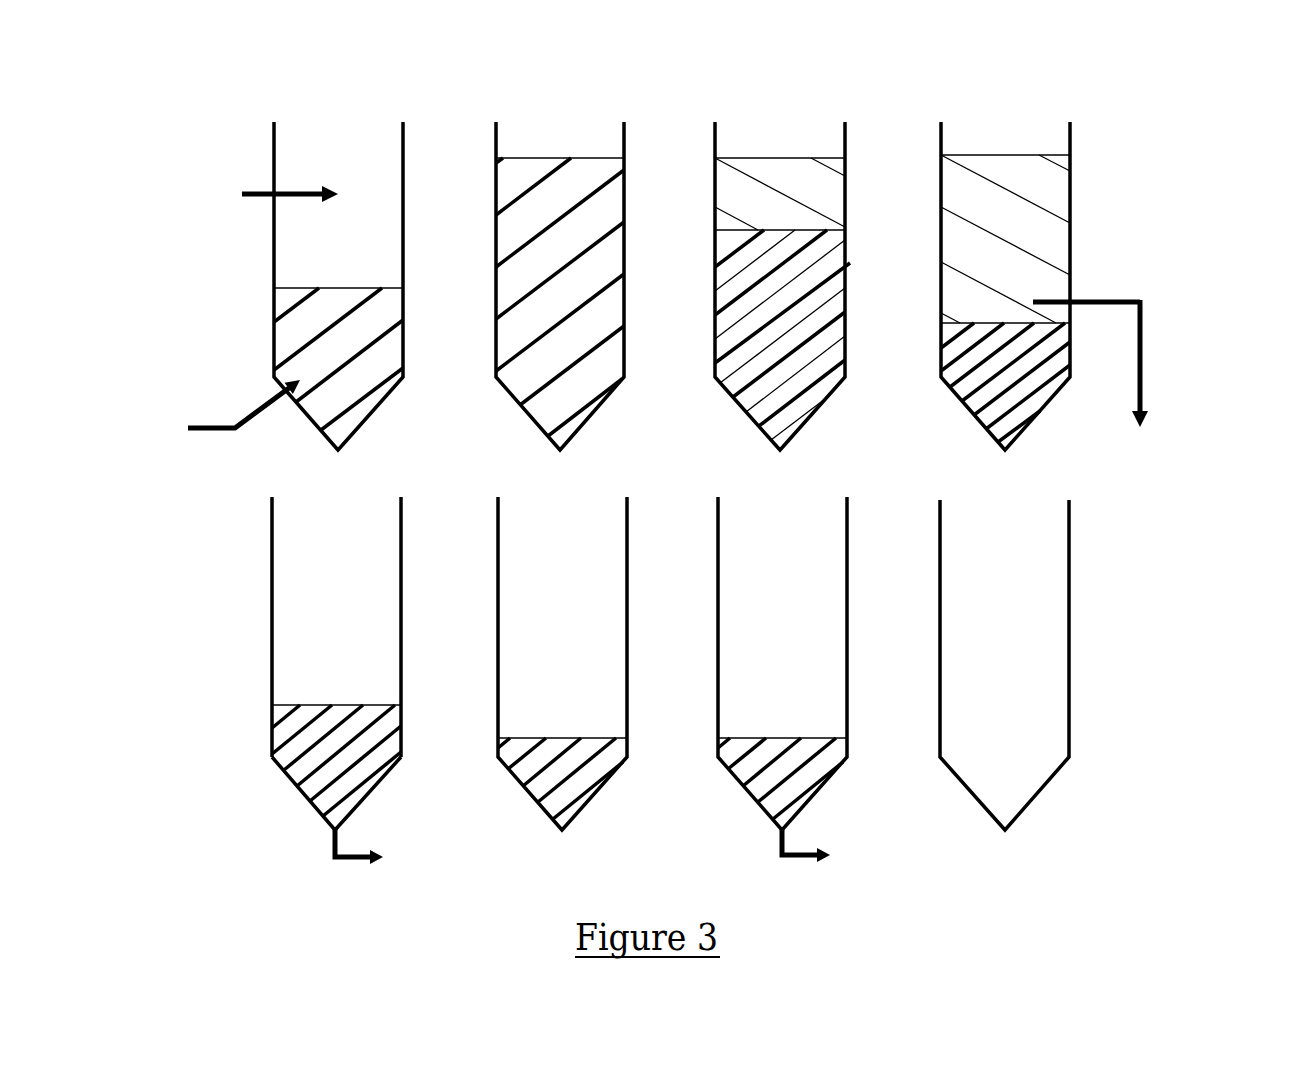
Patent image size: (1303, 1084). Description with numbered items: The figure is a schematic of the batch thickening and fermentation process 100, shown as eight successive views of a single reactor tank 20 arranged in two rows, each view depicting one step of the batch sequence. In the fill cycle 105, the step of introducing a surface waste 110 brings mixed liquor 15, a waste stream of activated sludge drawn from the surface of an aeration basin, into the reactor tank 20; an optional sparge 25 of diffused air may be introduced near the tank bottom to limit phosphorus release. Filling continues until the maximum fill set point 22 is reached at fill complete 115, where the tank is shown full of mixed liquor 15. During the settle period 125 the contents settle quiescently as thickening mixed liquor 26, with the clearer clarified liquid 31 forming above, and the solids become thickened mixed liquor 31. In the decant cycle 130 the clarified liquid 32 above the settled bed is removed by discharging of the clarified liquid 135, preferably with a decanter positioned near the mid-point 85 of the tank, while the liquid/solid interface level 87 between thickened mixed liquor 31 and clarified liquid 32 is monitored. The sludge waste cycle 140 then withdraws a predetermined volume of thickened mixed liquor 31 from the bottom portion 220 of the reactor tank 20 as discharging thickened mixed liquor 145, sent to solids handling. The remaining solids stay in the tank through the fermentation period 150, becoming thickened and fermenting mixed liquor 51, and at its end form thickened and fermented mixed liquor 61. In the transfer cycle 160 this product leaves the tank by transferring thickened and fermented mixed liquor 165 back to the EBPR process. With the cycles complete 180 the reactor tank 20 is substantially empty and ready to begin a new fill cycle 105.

The batch thickening and fermentation process 100 is at (662, 77).
The fill cycle 105 is at (509, 341).
The introducing a surface waste 110 is at (255, 191).
The reactor tank 20 is at (940, 584).
The mixed liquor 15 is at (285, 347).
The sparge 25 is at (243, 432).
The fill complete 115 is at (579, 147).
The maximum fill set point 22 is at (496, 158).
The settle period 125 is at (797, 150).
The liquid/solid interface level 87 is at (715, 225).
The thickening mixed liquor 26 is at (718, 378).
The thickened mixed liquor 31 is at (228, 706).
The decant cycle 130 is at (1022, 151).
The clarified liquid 32 is at (1040, 224).
The mid-point 85 is at (1035, 282).
The discharging of the clarified liquid 135 is at (1147, 387).
The sludge waste cycle 140 is at (352, 552).
The bottom portion 220 is at (298, 795).
The discharging thickened mixed liquor 145 is at (335, 850).
The fermentation period 150 is at (579, 549).
The thickened and fermenting mixed liquor 51 is at (510, 763).
The transfer cycle 160 is at (799, 556).
The thickened and fermented mixed liquor 61 is at (732, 763).
The transferring thickened and fermented mixed liquor 165 is at (780, 849).
The cycles complete 180 is at (1022, 559).